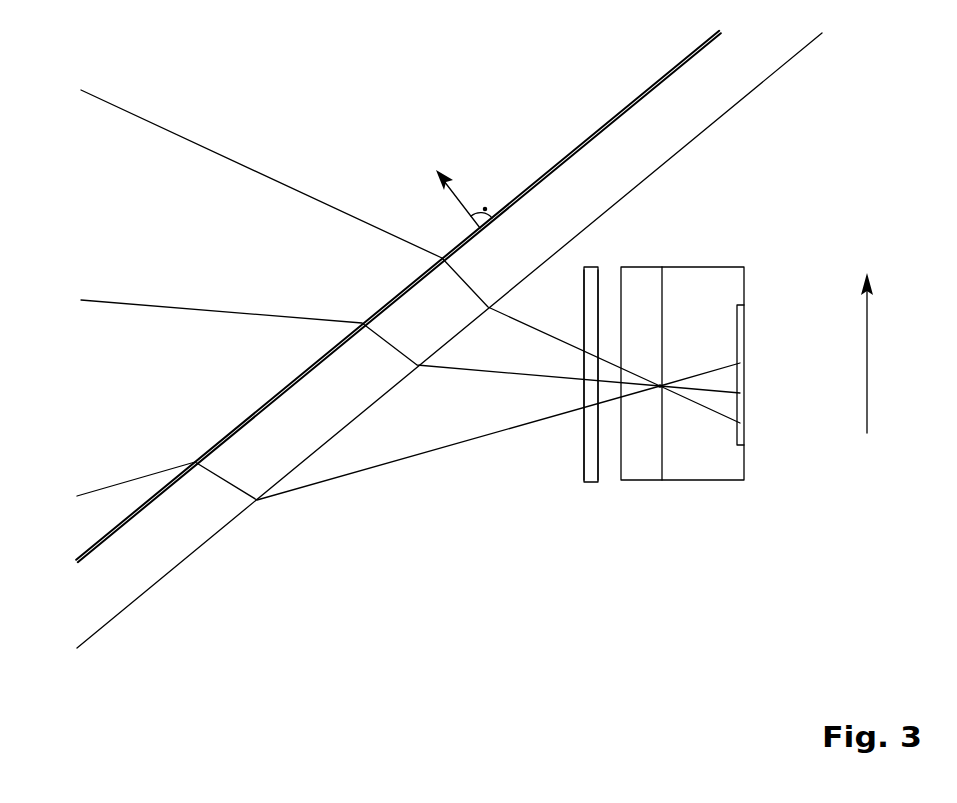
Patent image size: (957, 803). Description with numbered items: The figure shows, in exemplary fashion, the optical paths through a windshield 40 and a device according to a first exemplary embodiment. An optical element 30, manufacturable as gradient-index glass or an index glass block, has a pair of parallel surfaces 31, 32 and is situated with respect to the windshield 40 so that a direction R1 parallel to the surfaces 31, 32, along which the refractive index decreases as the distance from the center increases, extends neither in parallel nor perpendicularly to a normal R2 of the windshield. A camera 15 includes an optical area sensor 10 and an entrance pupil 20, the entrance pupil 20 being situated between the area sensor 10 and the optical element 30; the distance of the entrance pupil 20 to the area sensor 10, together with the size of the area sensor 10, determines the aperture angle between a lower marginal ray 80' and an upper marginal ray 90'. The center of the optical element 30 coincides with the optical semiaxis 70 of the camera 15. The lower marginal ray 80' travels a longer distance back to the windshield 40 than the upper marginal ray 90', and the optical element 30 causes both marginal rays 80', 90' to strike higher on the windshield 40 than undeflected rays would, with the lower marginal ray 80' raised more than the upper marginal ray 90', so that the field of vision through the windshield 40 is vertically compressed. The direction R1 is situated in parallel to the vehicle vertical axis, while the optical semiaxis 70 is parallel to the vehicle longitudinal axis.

The windshield 40 is at (668, 70).
The upper marginal ray 90' is at (410, 256).
The optical semiaxis 70 is at (466, 370).
The lower marginal ray 80' is at (408, 449).
The entrance pupil 20 is at (662, 388).
The optical element 30 is at (591, 267).
The parallel surface 32 is at (584, 468).
The parallel surface 31 is at (598, 470).
The camera 15 is at (708, 518).
The optical area sensor 10 is at (737, 320).
The normal of the windshield R2 is at (458, 192).
The direction parallel to the surfaces R1 is at (867, 363).